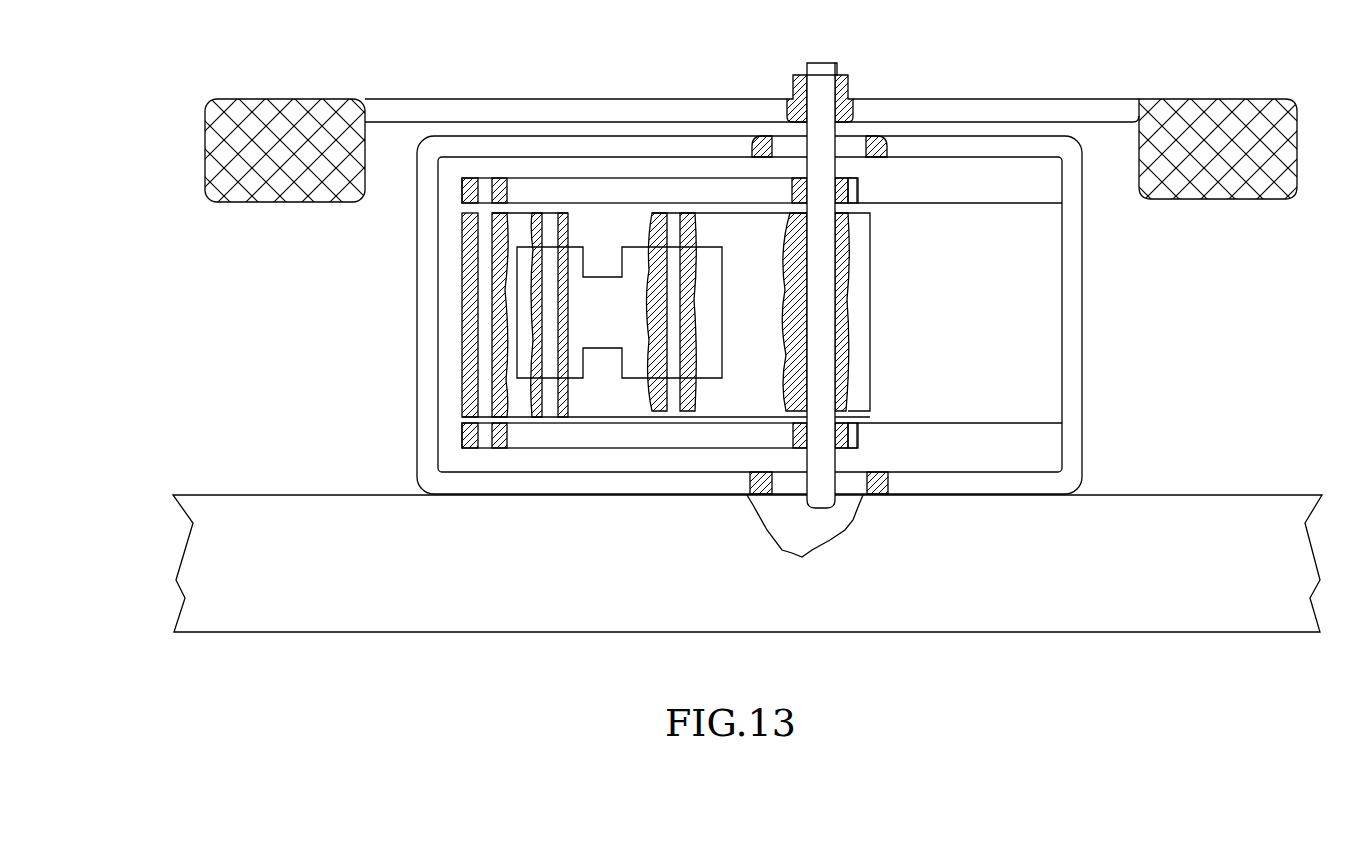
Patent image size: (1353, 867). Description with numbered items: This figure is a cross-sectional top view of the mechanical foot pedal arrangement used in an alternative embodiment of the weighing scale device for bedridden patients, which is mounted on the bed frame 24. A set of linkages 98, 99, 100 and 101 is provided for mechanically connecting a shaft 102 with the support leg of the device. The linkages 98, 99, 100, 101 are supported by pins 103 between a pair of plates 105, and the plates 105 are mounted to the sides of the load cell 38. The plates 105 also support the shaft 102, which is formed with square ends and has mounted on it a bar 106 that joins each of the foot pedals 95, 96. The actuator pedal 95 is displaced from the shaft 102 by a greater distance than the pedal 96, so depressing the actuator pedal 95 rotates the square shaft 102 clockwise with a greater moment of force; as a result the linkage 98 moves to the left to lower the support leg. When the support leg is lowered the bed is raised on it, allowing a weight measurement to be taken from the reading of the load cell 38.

The bed frame 24 is at (1200, 494).
The load cell 38 is at (1033, 390).
The actuator pedal 95 is at (1210, 95).
The foot pedal 96 is at (263, 98).
The linkage 98 is at (603, 287).
The linkage 99 is at (733, 400).
The linkage 100 is at (528, 205).
The linkage 101 is at (517, 372).
The shaft 102 is at (827, 152).
The pins 103 is at (558, 417).
The plates 105 is at (603, 437).
The bar 106 is at (983, 97).